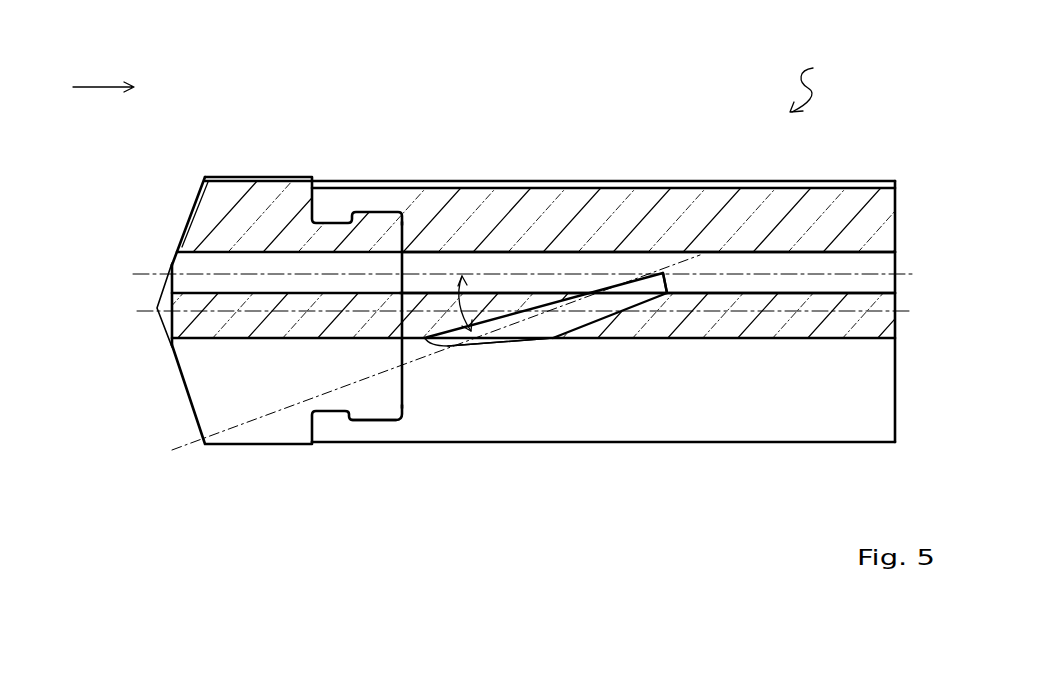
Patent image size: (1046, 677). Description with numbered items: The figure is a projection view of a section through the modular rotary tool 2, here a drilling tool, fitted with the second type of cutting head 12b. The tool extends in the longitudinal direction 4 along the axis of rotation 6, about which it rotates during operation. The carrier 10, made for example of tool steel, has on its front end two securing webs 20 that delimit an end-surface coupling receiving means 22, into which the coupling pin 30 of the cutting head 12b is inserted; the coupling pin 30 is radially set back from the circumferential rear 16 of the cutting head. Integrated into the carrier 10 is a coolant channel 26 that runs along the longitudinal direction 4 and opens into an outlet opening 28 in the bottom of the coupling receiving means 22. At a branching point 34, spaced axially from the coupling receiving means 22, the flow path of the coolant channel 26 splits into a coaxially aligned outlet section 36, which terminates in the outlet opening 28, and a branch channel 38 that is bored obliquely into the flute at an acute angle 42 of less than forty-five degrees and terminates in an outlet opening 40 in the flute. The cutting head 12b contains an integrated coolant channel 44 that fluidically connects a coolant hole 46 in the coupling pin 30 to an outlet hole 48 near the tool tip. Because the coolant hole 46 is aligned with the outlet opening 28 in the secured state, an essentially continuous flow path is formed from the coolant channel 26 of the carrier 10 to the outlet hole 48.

The rotary tool 2 is at (836, 80).
The longitudinal direction 4 is at (103, 86).
The axis of rotation 6 is at (137, 310).
The carrier 10 is at (893, 217).
The cutting head 12b is at (193, 215).
The rear 16 is at (243, 448).
The securing webs 20 is at (330, 203).
The coupling receiving means 22 is at (408, 382).
The coolant channels 26 is at (883, 288).
The outlet opening 28 is at (408, 263).
The coupling pin 30 is at (373, 402).
The branching point 34 is at (642, 268).
The outlet section 36 is at (547, 265).
The branch channel 38 is at (545, 325).
The outlet opening 40 is at (490, 347).
The angle 42 is at (466, 288).
The coolant channels 44 is at (284, 268).
The coolant hole 46 is at (469, 209).
The outlet hole 48 is at (170, 260).